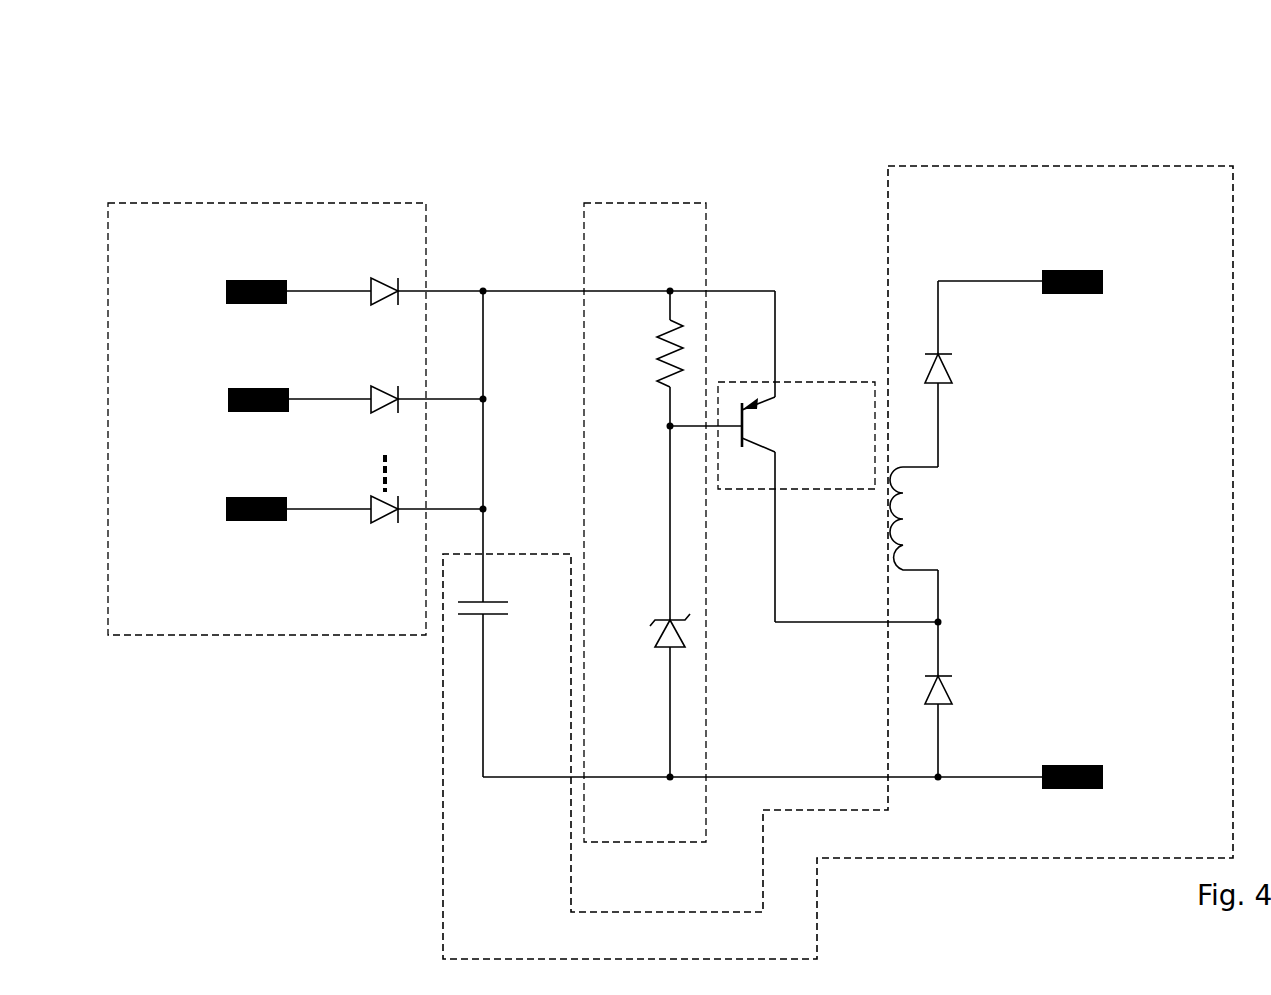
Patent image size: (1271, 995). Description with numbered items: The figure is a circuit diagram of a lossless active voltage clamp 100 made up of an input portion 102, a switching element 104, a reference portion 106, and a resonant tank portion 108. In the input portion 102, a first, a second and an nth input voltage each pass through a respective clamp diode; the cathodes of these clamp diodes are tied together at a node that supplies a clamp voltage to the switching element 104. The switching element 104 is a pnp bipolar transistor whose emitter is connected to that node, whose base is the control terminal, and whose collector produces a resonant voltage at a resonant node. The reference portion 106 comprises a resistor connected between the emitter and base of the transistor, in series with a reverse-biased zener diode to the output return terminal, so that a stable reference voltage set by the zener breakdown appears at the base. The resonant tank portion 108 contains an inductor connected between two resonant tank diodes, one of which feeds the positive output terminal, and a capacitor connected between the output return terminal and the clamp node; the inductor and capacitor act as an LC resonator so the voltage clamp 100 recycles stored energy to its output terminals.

The voltage clamp 100 is at (100, 106).
The input portion 102 is at (267, 203).
The switching element 104 is at (795, 381).
The reference portion 106 is at (647, 203).
The resonant tank portion 108 is at (1049, 166).